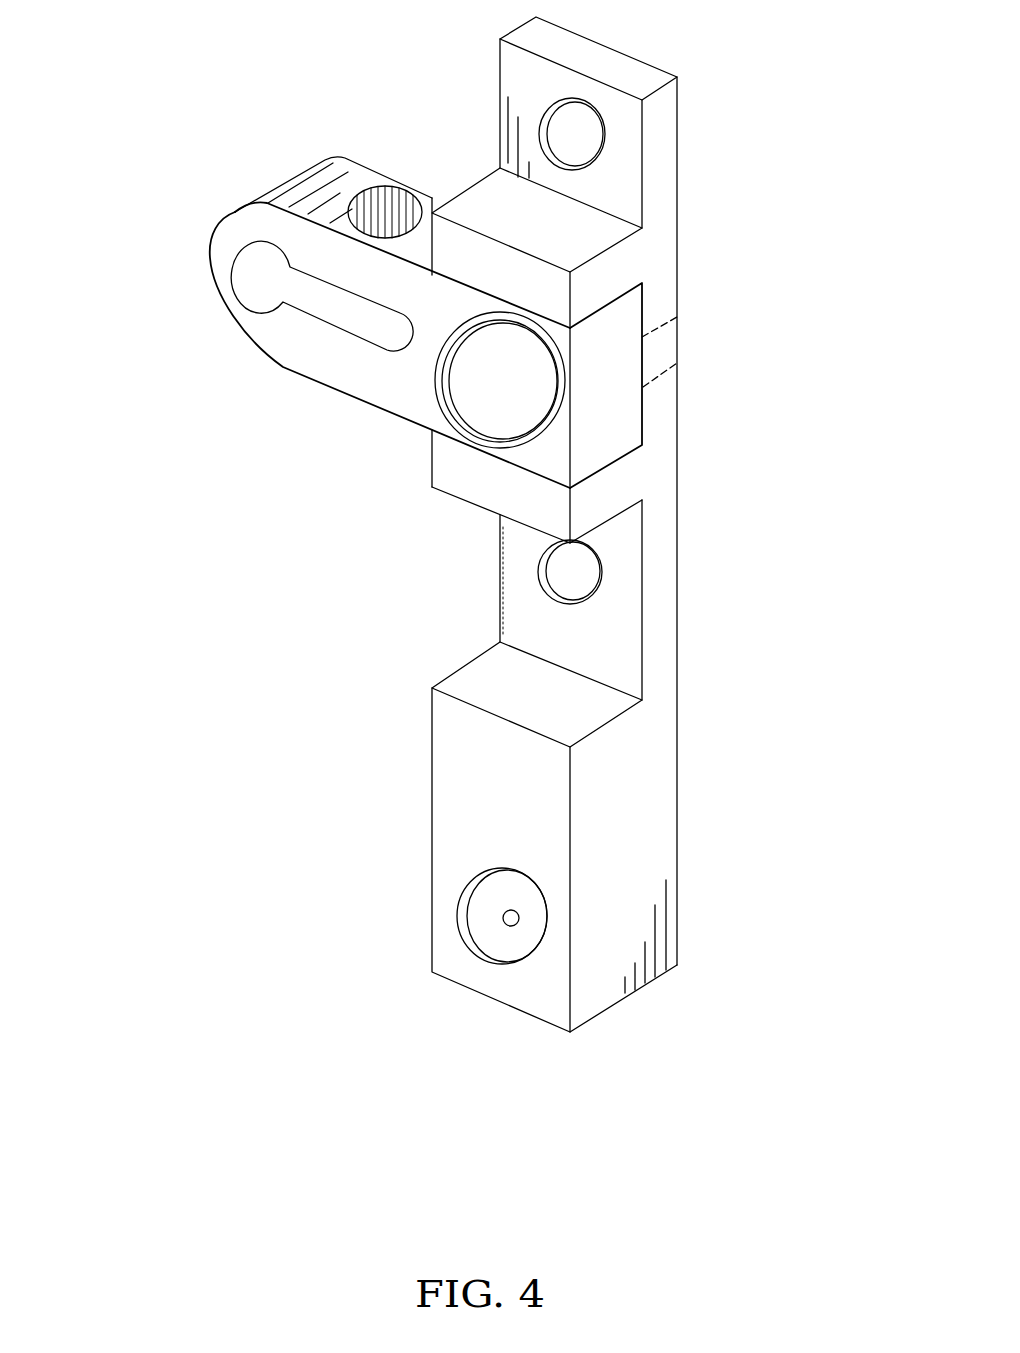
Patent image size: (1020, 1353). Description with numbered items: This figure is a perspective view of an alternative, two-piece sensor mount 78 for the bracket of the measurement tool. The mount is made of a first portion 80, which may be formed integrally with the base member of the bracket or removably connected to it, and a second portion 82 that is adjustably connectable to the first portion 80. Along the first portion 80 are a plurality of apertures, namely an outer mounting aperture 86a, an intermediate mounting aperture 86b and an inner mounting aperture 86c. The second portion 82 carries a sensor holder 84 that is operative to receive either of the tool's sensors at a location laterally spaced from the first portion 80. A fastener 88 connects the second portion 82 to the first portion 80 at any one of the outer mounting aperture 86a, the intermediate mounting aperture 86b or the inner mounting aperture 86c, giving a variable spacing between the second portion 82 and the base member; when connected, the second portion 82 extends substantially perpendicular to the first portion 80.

The two-piece sensor mount 78 is at (176, 104).
The first portion 80 is at (677, 262).
The second portion 82 is at (310, 165).
The sensor holder 84 is at (217, 230).
The outer mounting aperture 86a is at (602, 597).
The intermediate mounting aperture 86b is at (662, 373).
The inner mounting aperture 86c is at (607, 162).
The fastener 88 is at (487, 403).